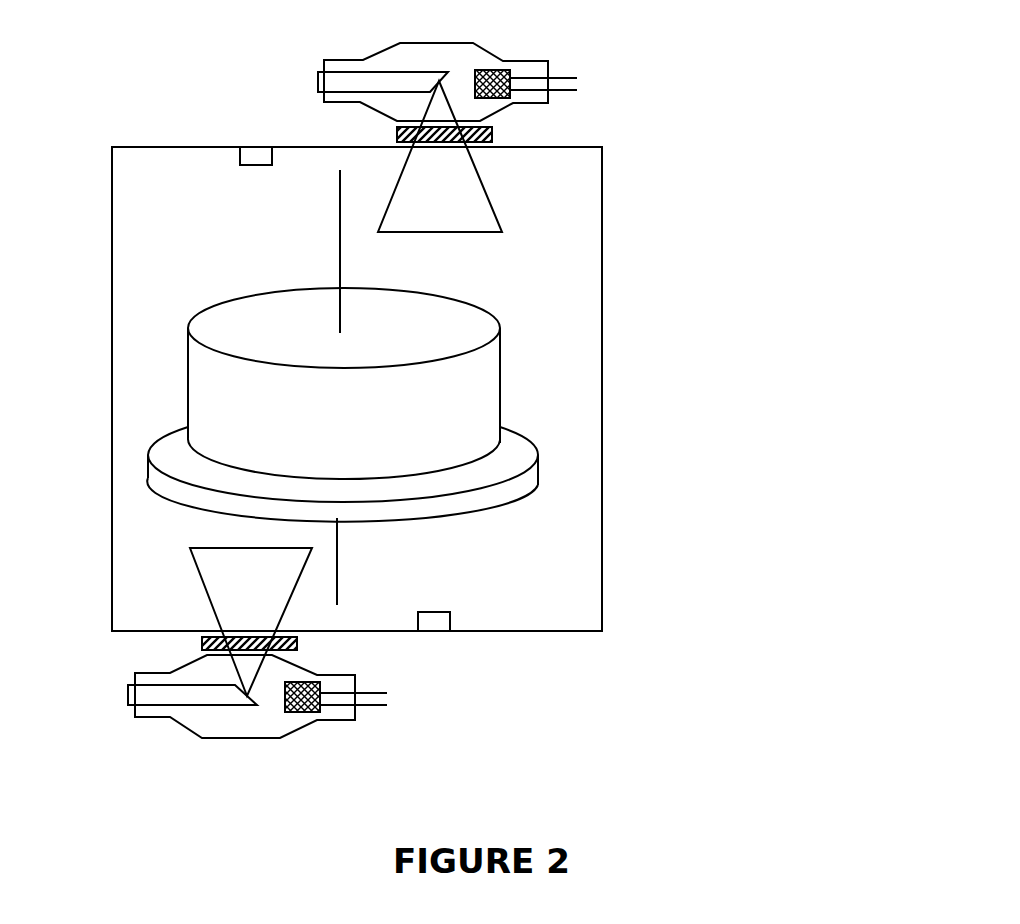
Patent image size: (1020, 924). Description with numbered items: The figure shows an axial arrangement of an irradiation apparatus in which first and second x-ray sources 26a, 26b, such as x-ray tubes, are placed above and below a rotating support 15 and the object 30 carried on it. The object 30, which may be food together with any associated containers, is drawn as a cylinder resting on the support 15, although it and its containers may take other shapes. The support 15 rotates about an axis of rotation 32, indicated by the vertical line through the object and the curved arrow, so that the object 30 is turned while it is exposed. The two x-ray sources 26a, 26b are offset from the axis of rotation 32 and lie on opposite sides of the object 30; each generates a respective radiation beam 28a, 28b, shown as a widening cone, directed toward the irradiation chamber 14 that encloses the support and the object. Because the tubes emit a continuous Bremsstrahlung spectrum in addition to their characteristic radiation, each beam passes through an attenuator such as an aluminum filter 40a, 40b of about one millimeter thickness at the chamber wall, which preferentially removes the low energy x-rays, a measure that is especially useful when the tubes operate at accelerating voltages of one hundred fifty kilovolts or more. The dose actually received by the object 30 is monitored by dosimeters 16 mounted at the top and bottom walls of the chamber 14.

The irradiation chamber 14 is at (605, 422).
The rotating support 15 is at (448, 502).
The dosimeter 16 is at (238, 152).
The first x-ray source 26a is at (316, 57).
The second x-ray source 26b is at (180, 738).
The first radiation beam 28a is at (392, 195).
The second radiation beam 28b is at (293, 607).
The object 30 is at (185, 382).
The axis of rotation 32 is at (400, 256).
The first aluminum filter 40a is at (492, 135).
The second aluminum filter 40b is at (202, 645).